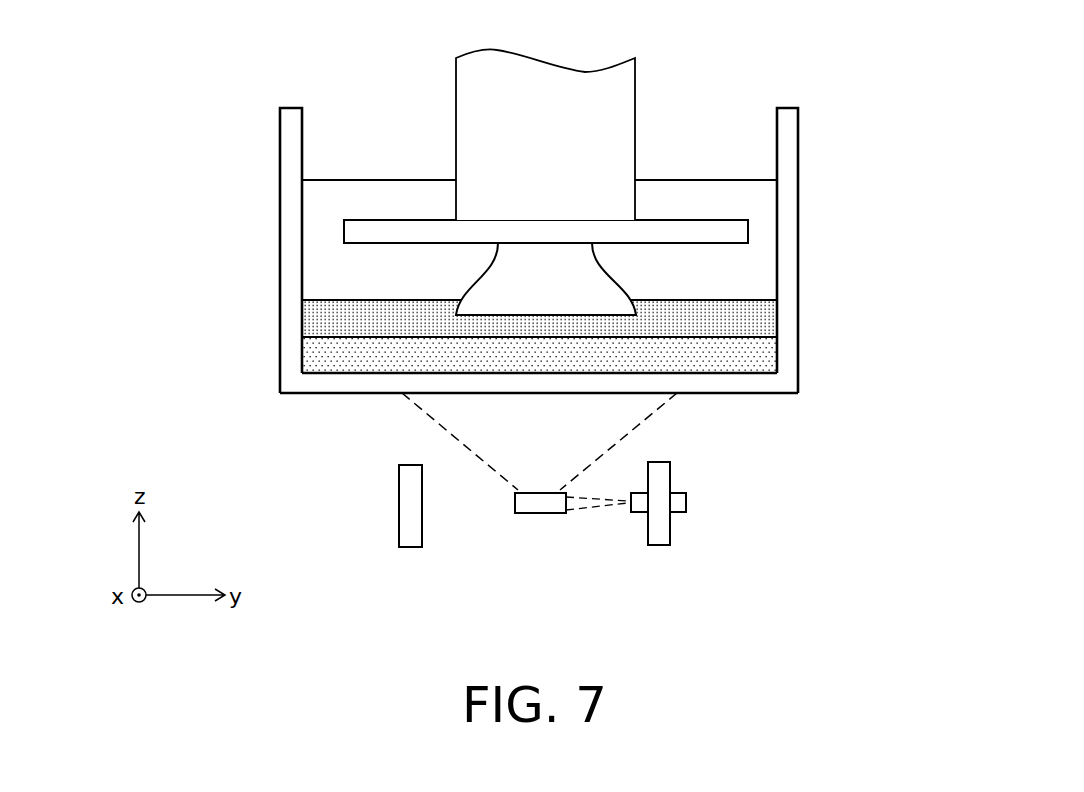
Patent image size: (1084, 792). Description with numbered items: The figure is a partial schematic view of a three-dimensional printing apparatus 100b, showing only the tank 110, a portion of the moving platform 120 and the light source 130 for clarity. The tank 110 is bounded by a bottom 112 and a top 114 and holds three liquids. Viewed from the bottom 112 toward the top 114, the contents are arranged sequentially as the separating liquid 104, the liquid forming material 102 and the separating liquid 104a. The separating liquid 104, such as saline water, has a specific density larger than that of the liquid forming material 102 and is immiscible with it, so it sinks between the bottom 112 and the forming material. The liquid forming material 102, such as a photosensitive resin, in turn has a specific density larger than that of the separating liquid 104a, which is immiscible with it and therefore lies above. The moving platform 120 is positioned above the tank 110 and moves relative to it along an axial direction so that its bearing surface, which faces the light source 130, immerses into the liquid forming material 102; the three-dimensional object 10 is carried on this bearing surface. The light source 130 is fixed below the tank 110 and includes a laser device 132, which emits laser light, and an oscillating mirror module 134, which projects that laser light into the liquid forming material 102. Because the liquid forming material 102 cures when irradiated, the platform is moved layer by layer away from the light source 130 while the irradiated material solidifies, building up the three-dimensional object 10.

The three-dimensional object 10 is at (607, 283).
The three-dimensional printing apparatus 100b is at (537, 340).
The liquid forming material 102 is at (765, 322).
The separating liquid 104 is at (765, 357).
The separating liquid 104a is at (765, 217).
The tank 110 is at (525, 251).
The bottom of the tank 112 is at (280, 393).
The top of the tank 114 is at (280, 108).
The moving platform 120 is at (615, 123).
The light source 130 is at (576, 512).
The laser device 132 is at (658, 545).
The oscillating mirror module 134 is at (545, 513).